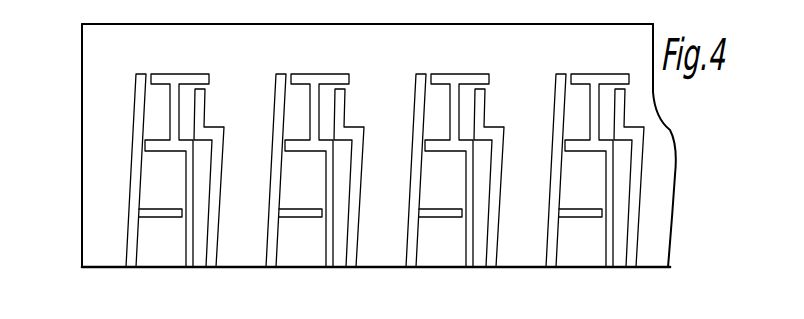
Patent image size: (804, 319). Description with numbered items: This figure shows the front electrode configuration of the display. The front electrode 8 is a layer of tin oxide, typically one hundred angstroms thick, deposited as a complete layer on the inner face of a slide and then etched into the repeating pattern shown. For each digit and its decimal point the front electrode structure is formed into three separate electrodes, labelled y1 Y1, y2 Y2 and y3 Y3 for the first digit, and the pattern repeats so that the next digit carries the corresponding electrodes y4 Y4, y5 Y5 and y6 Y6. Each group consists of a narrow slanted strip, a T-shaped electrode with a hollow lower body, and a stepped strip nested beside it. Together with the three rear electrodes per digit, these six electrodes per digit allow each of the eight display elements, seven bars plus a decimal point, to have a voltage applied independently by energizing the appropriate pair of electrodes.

The front electrode 8 is at (181, 73).
The front electrode y1 Y1 is at (126, 253).
The front electrode y2 Y2 is at (186, 252).
The front electrode y3 Y3 is at (208, 252).
The front electrode y4 Y4 is at (268, 256).
The front electrode y5 Y5 is at (333, 258).
The front electrode y6 Y6 is at (350, 260).